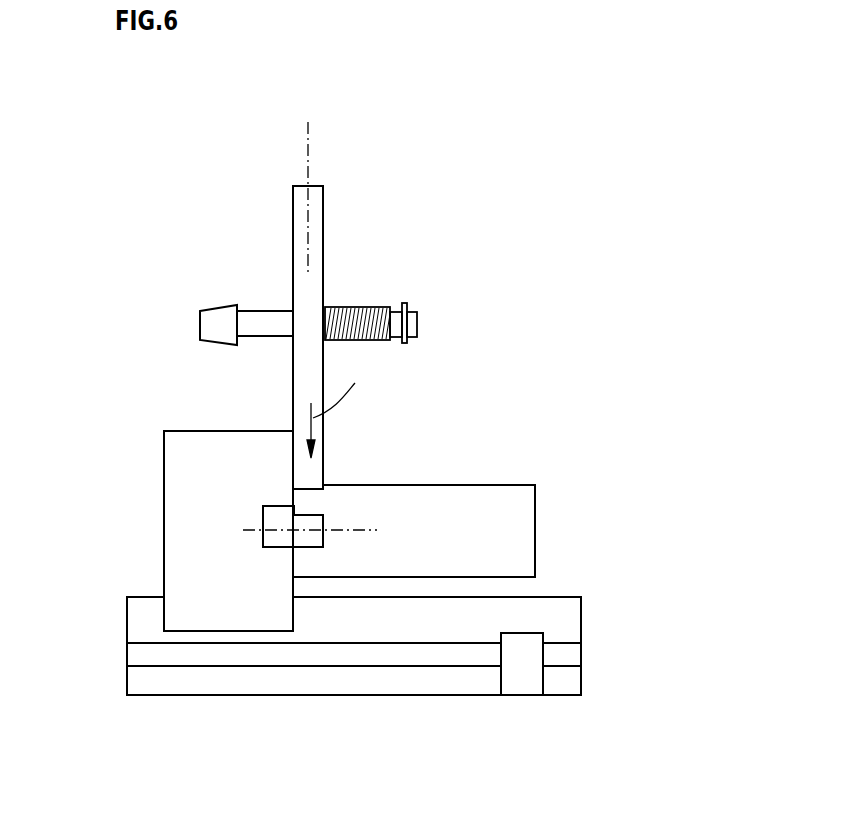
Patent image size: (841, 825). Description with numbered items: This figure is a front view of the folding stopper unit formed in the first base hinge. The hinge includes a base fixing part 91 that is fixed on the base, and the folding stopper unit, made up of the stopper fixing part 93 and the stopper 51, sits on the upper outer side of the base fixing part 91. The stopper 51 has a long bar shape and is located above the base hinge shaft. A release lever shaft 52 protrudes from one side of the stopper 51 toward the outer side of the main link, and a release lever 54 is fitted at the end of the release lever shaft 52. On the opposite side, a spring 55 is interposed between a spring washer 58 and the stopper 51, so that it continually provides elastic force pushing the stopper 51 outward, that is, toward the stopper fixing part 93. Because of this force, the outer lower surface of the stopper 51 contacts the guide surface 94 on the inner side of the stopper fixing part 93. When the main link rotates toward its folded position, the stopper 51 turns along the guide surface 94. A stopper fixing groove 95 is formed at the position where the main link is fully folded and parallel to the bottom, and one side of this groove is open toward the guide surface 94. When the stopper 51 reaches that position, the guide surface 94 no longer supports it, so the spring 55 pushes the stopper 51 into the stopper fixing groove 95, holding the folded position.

The stopper 51 is at (297, 210).
The release lever shaft 52 is at (262, 315).
The release lever 54 is at (222, 307).
The spring 55 is at (355, 307).
The spring washer 58 is at (418, 323).
The base fixing part 91 is at (263, 683).
The stopper fixing part 93 is at (185, 453).
The guide surface 94 is at (295, 498).
The stopper fixing groove 95 is at (275, 523).